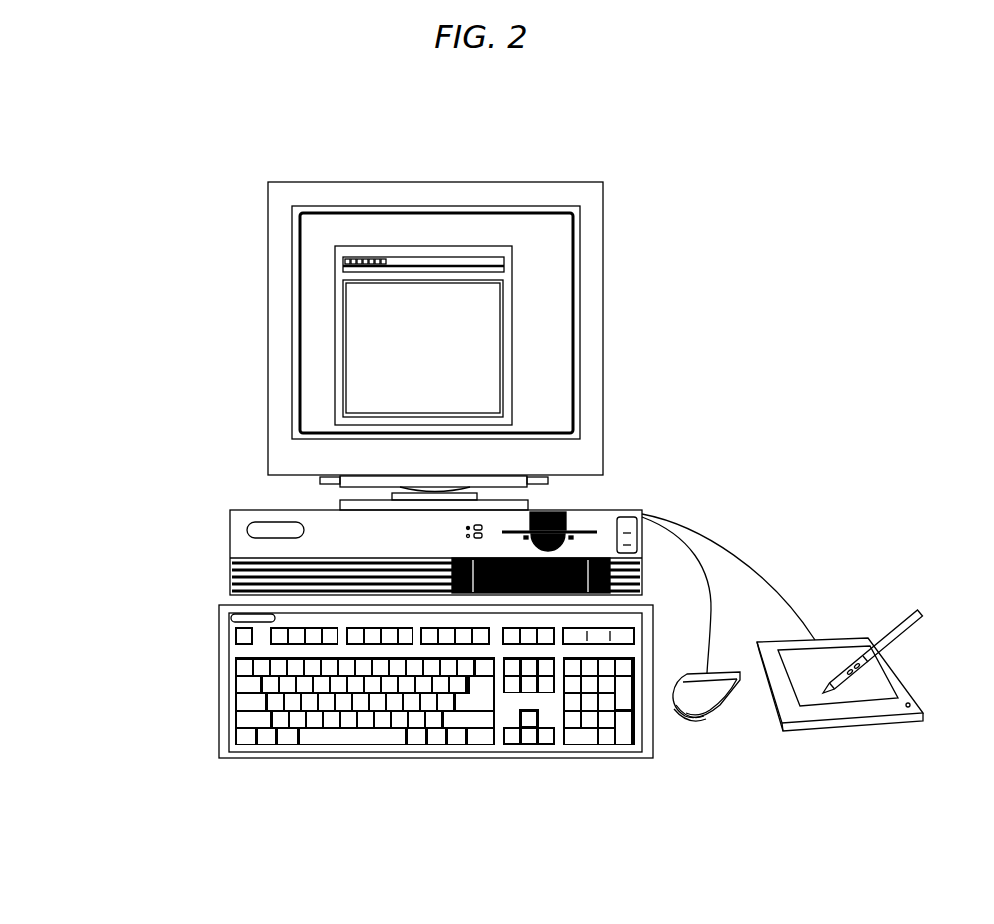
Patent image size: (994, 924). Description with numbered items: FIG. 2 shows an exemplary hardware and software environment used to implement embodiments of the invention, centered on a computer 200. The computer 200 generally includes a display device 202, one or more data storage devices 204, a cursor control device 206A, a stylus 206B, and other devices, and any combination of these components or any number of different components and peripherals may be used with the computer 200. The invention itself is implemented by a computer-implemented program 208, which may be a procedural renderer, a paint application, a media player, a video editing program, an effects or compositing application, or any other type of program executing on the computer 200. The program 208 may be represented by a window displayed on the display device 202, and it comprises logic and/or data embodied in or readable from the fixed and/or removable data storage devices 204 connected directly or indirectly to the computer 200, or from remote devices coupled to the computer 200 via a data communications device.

The computer 200 is at (232, 529).
The display device 202 is at (583, 180).
The data storage device 204 is at (582, 529).
The cursor control device 206A is at (710, 735).
The stylus 206B is at (860, 735).
The computer-implemented program 208 is at (513, 332).